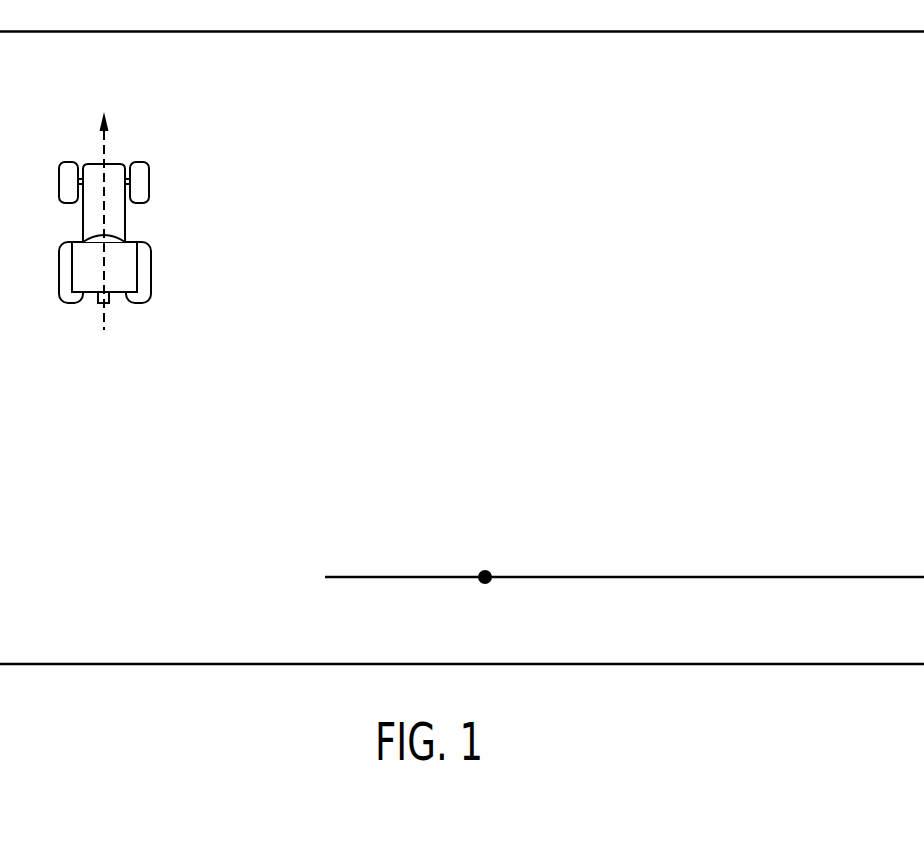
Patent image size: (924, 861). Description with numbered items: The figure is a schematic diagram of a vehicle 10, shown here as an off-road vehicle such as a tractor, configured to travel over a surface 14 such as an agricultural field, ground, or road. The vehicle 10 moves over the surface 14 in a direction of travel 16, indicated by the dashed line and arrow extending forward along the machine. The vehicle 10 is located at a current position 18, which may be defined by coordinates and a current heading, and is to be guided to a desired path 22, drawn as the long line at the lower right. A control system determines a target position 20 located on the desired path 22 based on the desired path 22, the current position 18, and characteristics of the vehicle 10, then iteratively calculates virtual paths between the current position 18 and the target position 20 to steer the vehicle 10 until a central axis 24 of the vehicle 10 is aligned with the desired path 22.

The vehicle 10 is at (138, 267).
The surface 14 is at (660, 279).
The direction of travel 16 is at (106, 145).
The current position 18 is at (159, 224).
The target position 20 is at (484, 552).
The desired path 22 is at (643, 577).
The central axis 24 is at (105, 316).